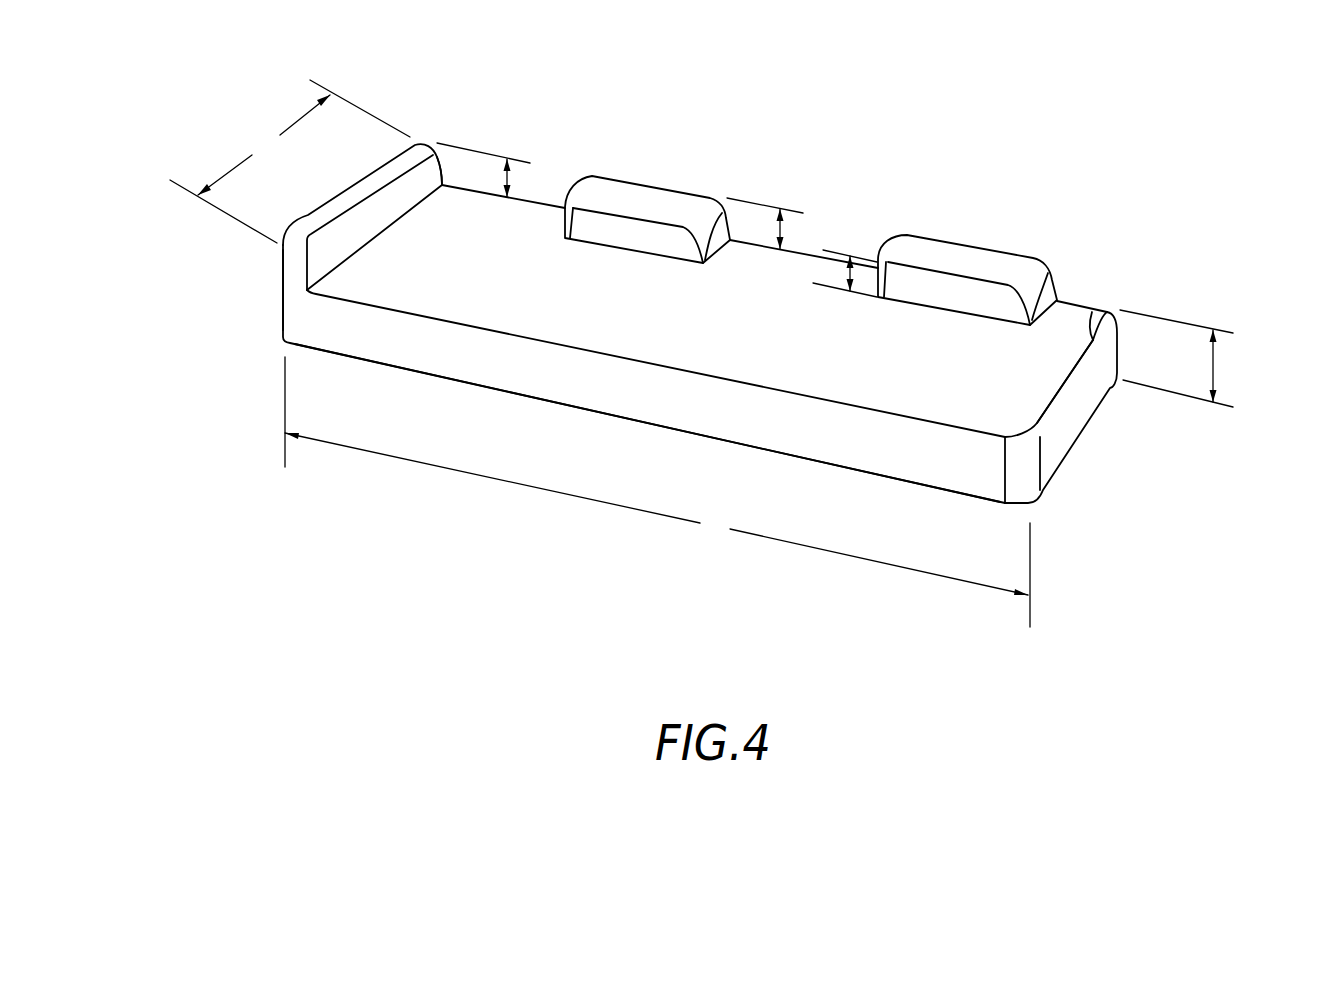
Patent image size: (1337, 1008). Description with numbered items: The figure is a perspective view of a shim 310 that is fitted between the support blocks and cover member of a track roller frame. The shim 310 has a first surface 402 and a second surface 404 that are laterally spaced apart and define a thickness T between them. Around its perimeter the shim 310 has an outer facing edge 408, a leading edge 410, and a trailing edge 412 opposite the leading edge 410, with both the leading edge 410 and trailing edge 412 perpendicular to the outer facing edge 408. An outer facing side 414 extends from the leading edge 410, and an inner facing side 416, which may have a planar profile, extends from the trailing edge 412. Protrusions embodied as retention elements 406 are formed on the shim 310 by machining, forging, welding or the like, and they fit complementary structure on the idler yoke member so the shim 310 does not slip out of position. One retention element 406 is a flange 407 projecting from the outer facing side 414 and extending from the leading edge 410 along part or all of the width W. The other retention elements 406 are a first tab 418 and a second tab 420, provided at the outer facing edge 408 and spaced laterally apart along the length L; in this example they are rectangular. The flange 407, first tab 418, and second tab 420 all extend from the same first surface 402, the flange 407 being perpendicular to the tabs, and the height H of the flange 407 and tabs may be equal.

The shim 310 is at (967, 102).
The first surface 402 is at (1077, 317).
The second surface 404 is at (637, 423).
The retention elements 406 is at (314, 186).
The flange 407 is at (352, 193).
The outer facing edge 408 is at (803, 253).
The leading edge 410 is at (443, 177).
The trailing edge 412 is at (1095, 342).
The outer facing side 414 is at (270, 292).
The inner facing side 416 is at (1077, 415).
The first tab 418 is at (652, 197).
The second tab 420 is at (975, 257).